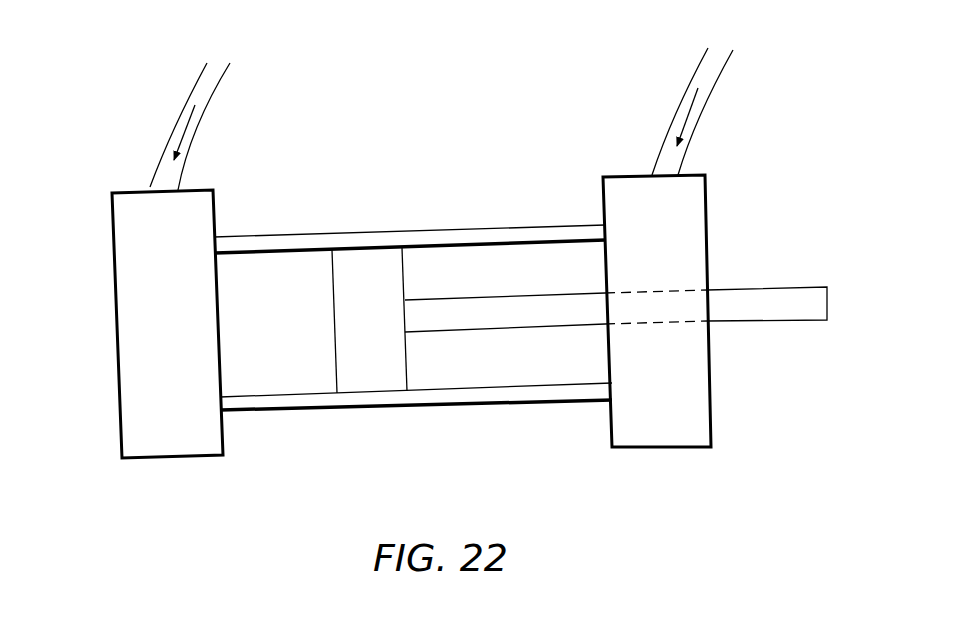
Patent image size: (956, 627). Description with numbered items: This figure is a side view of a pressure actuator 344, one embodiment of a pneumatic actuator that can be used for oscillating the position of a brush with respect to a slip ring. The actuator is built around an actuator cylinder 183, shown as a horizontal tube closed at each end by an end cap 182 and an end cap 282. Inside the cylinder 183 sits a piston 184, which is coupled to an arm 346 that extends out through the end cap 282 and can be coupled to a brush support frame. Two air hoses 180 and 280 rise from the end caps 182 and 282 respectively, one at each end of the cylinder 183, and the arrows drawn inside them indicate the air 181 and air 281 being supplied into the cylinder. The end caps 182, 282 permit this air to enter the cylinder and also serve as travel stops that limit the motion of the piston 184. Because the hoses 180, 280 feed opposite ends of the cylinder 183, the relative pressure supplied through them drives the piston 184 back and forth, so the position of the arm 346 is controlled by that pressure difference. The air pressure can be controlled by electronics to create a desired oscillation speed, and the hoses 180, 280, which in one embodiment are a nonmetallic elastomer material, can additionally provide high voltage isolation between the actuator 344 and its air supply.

The air hose 180 is at (182, 113).
The air 181 is at (191, 140).
The end cap 182 is at (125, 297).
The actuator cylinder 183 is at (293, 254).
The piston 184 is at (359, 265).
The pressure actuator 344 is at (527, 108).
The arm 346 is at (803, 281).
The air hose 280 is at (684, 101).
The air 281 is at (690, 120).
The end cap 282 is at (692, 212).